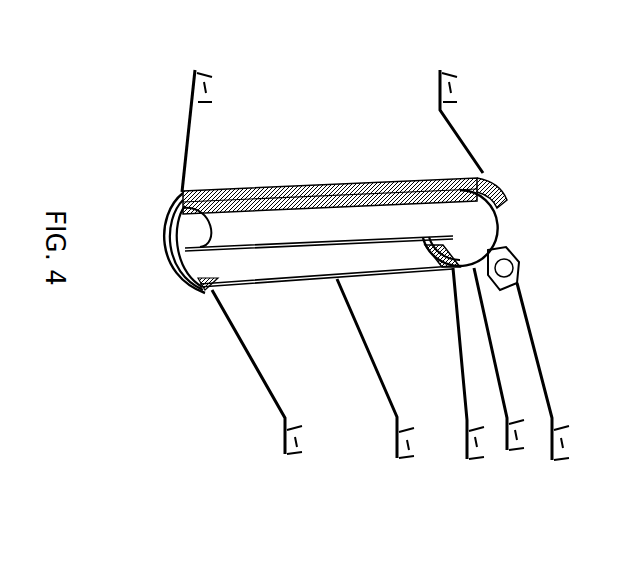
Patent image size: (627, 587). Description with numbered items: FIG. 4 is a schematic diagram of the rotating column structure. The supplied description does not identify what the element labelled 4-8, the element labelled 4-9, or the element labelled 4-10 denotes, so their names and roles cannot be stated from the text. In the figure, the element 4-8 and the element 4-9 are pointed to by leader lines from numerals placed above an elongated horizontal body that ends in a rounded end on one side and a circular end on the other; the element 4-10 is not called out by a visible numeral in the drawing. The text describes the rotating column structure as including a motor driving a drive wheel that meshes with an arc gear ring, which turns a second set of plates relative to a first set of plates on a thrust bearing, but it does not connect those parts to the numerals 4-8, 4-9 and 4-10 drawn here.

The roller body 4-8 is at (302, 225).
The band layer 4-9 is at (380, 212).
The support legs 4-10 is at (392, 317).